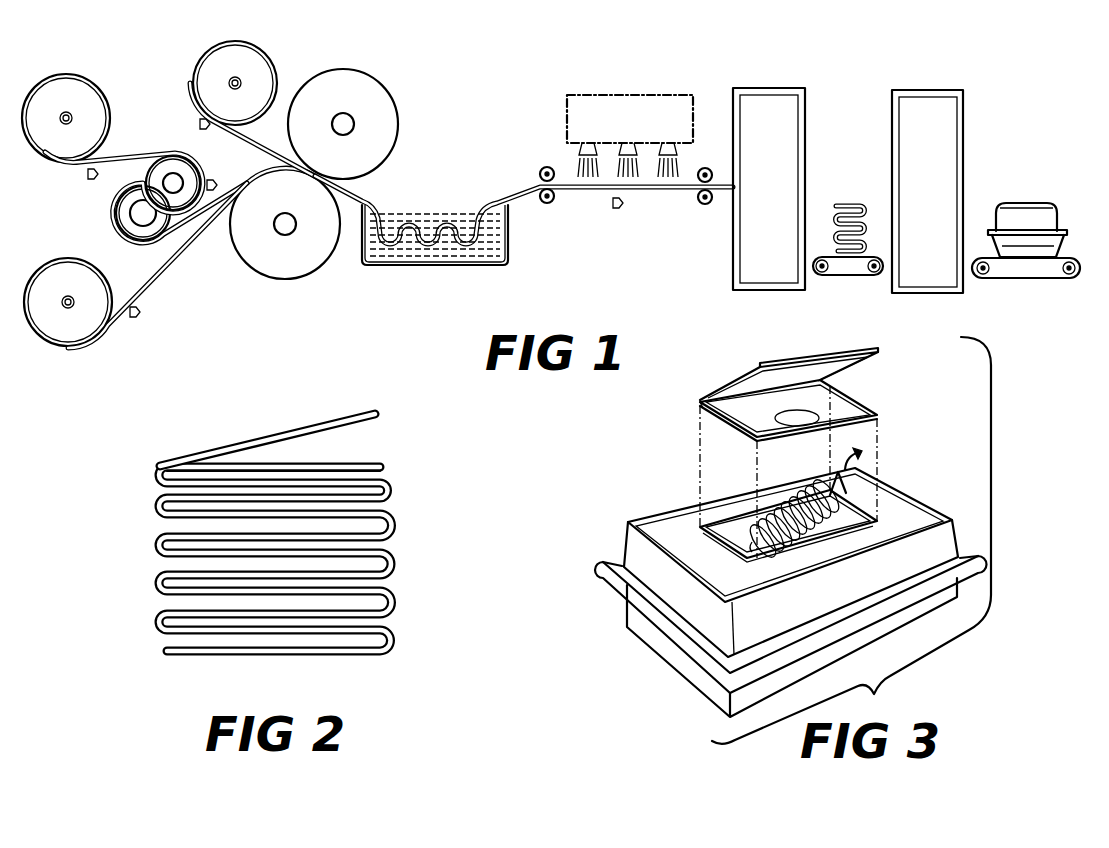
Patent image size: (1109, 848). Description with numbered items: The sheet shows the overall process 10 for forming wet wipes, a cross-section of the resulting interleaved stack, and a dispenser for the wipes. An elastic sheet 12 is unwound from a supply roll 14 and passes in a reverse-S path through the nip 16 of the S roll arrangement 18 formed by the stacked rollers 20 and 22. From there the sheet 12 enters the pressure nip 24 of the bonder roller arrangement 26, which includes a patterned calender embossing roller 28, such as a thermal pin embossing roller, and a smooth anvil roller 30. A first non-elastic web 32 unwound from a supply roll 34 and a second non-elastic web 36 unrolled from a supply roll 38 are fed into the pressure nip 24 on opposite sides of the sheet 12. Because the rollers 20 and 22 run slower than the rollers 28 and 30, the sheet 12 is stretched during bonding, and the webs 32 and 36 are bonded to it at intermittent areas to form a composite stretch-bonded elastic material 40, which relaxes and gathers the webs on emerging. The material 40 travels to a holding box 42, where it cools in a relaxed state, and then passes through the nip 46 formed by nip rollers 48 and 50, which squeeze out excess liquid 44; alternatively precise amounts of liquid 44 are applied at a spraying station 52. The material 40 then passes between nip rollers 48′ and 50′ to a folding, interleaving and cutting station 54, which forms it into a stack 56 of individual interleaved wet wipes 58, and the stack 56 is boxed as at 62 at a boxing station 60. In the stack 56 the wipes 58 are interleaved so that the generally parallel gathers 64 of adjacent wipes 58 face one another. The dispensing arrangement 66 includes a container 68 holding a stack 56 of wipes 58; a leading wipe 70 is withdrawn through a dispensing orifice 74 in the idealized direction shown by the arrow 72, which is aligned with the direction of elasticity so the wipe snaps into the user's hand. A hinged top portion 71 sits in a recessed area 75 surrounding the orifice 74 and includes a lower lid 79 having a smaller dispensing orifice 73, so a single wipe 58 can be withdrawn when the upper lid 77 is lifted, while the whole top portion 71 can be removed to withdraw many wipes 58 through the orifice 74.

In FIG. 1, the web processing apparatus 10 is at (488, 78).
In FIG. 1, the elastic sheet 12 is at (118, 157).
In FIG. 1, the supply roll 14 is at (105, 104).
In FIG. 1, the nip 16 is at (168, 220).
In FIG. 1, the S roll arrangement 18 is at (143, 188).
In FIG. 1, the stacked roller 20 is at (136, 231).
In FIG. 1, the stacked roller 22 is at (177, 158).
In FIG. 1, the pressure nip 24 is at (272, 161).
In FIG. 1, the bonder roller arrangement 26 is at (284, 147).
In FIG. 1, the patterned calender embossing roller 28 is at (398, 104).
In FIG. 1, the smooth anvil roller 30 is at (232, 236).
In FIG. 1, the first non-elastic web 32 is at (250, 138).
In FIG. 1, the supply roll 34 is at (203, 78).
In FIG. 1, the second non-elastic web 36 is at (146, 284).
In FIG. 1, the supply roll 38 is at (62, 258).
In FIG. 1, the composite stretch-bonded elastic material 40 is at (361, 196).
In FIG. 1, the holding box 42 is at (509, 243).
In FIG. 1, the liquid 44 is at (475, 200).
In FIG. 1, the nip 46 is at (529, 185).
In FIG. 1, the nip roller 48 is at (547, 166).
In FIG. 1, the nip roller 48′ is at (702, 172).
In FIG. 1, the nip roller 50 is at (555, 202).
In FIG. 1, the nip roller 50′ is at (698, 205).
In FIG. 1, the spraying station 52 is at (659, 95).
In FIG. 1, the folding, interleaving and cutting station 54 is at (779, 88).
In FIG. 1, the stack 56 is at (821, 190).
In FIG. 2, the stack 56 is at (174, 432).
In FIG. 1, the wet wipes 58 is at (877, 203).
In FIG. 2, the wet wipes 58 is at (293, 425).
In FIG. 3, the wet wipes 58 is at (827, 548).
In FIG. 1, the boxing station 60 is at (939, 90).
In FIG. 1, the box 62 is at (1034, 202).
In FIG. 2, the gathers 64 is at (149, 548).
In FIG. 3, the gathers 64 is at (818, 507).
In FIG. 3, the dispensing arrangement 66 is at (671, 493).
In FIG. 3, the container 68 is at (905, 495).
In FIG. 3, the leading wipe 70 is at (868, 507).
In FIG. 3, the hinged top portion 71 is at (712, 378).
In FIG. 3, the arrow 72 is at (860, 463).
In FIG. 3, the dispensing orifice 73 is at (860, 397).
In FIG. 3, the dispensing orifice 74 is at (750, 540).
In FIG. 3, the recessed area 75 is at (703, 525).
In FIG. 3, the upper lid 77 is at (787, 365).
In FIG. 3, the lower lid 79 is at (729, 432).